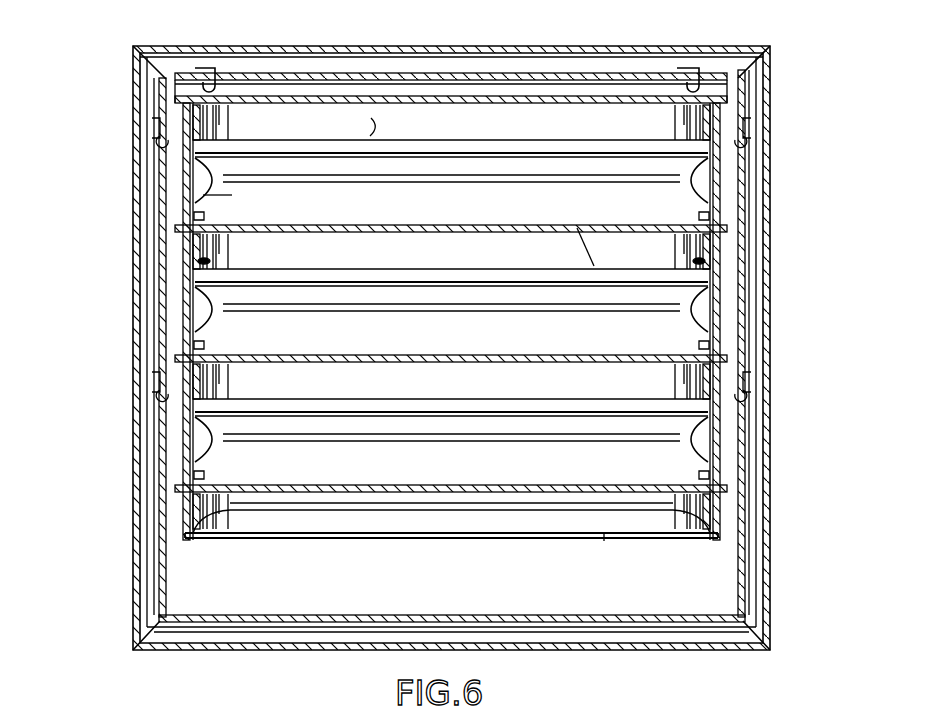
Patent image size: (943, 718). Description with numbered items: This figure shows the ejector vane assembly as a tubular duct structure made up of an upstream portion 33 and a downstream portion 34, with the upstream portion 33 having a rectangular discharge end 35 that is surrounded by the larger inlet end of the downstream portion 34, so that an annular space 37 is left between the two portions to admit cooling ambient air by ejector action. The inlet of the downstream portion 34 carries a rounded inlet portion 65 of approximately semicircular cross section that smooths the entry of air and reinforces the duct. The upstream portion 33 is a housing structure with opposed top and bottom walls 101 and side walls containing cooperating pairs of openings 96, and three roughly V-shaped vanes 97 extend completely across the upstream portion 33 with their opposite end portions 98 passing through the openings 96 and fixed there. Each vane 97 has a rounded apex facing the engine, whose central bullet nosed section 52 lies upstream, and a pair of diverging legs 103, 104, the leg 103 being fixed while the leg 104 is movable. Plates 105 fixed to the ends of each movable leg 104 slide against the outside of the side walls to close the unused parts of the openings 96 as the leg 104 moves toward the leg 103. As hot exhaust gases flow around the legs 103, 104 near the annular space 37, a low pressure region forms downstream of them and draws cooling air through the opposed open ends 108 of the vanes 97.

The upstream portion 33 is at (728, 317).
The downstream portion 34 is at (772, 469).
The discharge end 35 is at (202, 462).
The annular space 37 is at (524, 93).
The central bullet nosed section 52 is at (582, 250).
The rounded inlet portion 65 is at (134, 580).
The openings 96 is at (221, 140).
The V-shaped vane 97 is at (407, 135).
The end portions 98 is at (202, 169).
The walls 101 is at (305, 100).
The leg 103 is at (495, 228).
The leg 104 is at (617, 574).
The plates 105 is at (203, 260).
The open ends 108 is at (203, 197).